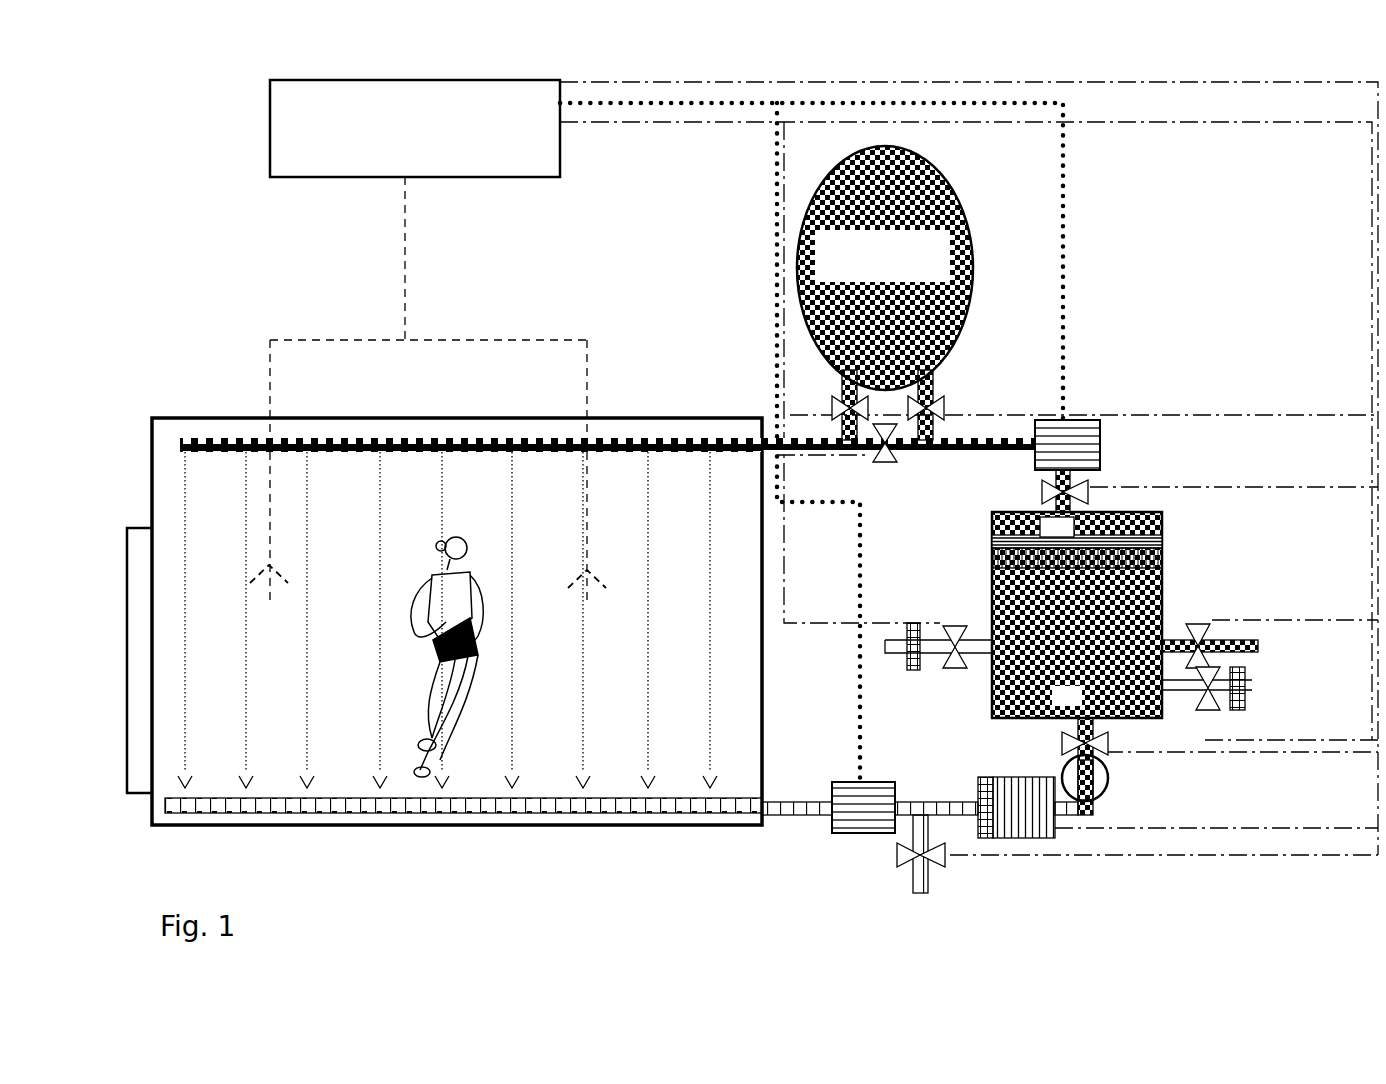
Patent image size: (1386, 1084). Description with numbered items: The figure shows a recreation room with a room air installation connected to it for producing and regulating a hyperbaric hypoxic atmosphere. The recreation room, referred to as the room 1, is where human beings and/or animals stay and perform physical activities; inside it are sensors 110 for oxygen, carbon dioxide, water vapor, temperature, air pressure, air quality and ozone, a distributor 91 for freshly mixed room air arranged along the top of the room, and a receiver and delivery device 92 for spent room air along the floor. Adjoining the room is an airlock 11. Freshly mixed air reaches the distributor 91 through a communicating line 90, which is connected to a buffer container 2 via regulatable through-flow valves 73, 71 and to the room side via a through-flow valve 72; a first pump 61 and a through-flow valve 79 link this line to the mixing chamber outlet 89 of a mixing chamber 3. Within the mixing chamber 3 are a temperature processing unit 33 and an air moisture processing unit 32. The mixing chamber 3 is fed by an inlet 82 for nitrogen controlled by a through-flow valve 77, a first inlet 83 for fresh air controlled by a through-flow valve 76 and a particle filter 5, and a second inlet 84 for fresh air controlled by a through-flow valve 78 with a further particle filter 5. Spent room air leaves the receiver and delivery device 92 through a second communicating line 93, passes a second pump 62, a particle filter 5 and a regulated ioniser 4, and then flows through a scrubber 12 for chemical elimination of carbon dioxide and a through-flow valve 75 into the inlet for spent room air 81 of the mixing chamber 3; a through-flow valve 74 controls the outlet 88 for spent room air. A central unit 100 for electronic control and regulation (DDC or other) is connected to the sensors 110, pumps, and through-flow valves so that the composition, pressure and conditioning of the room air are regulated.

The room 1 is at (446, 640).
The buffer container 2 is at (885, 293).
The mixing chamber 3 is at (1010, 613).
The regulated ioniser 4 is at (1035, 848).
The particle filter 5 is at (1076, 730).
The airlock 11 is at (96, 653).
The scrubber 12 is at (1147, 785).
The air moisture processing unit 32 is at (1101, 563).
The temperature processing unit 33 is at (1101, 545).
The first pump 61 is at (1110, 444).
The second pump 62 is at (835, 794).
The through-flow valve 71 is at (940, 408).
The through-flow valve 72 is at (894, 453).
The through-flow valve 73 is at (837, 408).
The through-flow valve 74 is at (929, 860).
The through-flow valve 75 is at (1097, 743).
The through-flow valve 76 is at (1198, 693).
The through-flow valve 77 is at (1199, 634).
The through-flow valve 78 is at (905, 638).
The through-flow valve 79 is at (1088, 491).
The inlet for spent room air 81 is at (1072, 750).
The inlet for nitrogen 82 is at (1262, 645).
The first inlet for fresh air 83 is at (1261, 690).
The second inlet for fresh air 84 is at (801, 640).
The outlet for spent room air 88 is at (908, 859).
The mixing chamber outlet 89 is at (1057, 527).
The communicating line 90 is at (898, 432).
The distributor for freshly mixed room air 91 is at (471, 458).
The receiver and delivery device for spent room air 92 is at (463, 793).
The second communicating line 93 is at (870, 797).
The central unit for electronic control and regulation 100 is at (433, 128).
The sensors 110 is at (427, 594).